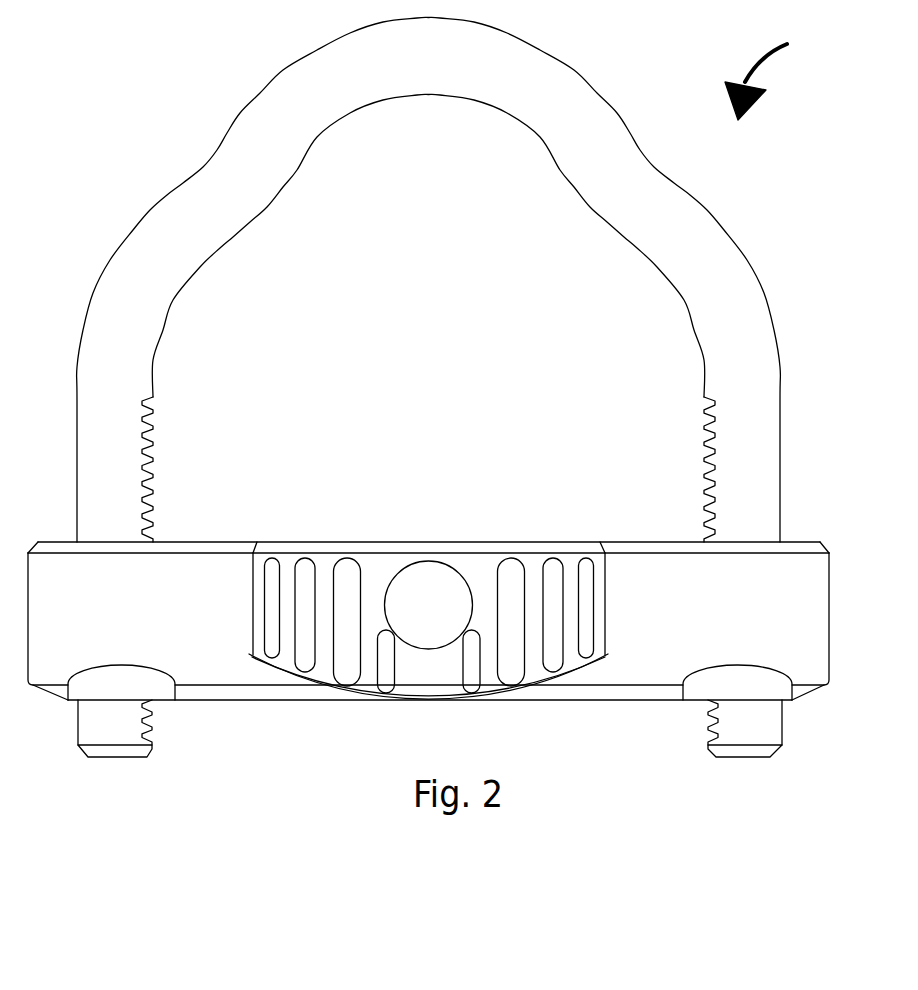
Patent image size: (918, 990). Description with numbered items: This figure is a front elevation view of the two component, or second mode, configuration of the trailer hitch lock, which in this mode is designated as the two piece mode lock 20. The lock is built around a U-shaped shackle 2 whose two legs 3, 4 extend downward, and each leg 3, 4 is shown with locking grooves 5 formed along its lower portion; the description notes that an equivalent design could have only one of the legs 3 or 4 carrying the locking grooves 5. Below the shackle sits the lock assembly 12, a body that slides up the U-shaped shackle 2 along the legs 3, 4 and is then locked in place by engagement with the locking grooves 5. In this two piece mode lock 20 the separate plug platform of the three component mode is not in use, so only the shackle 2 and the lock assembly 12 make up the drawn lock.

The two piece mode lock 20 is at (775, 75).
The U-shaped shackle 2 is at (640, 160).
The lock assembly 12 is at (808, 620).
The leg 3 is at (102, 727).
The leg 4 is at (780, 728).
The locking grooves 5 is at (708, 727).